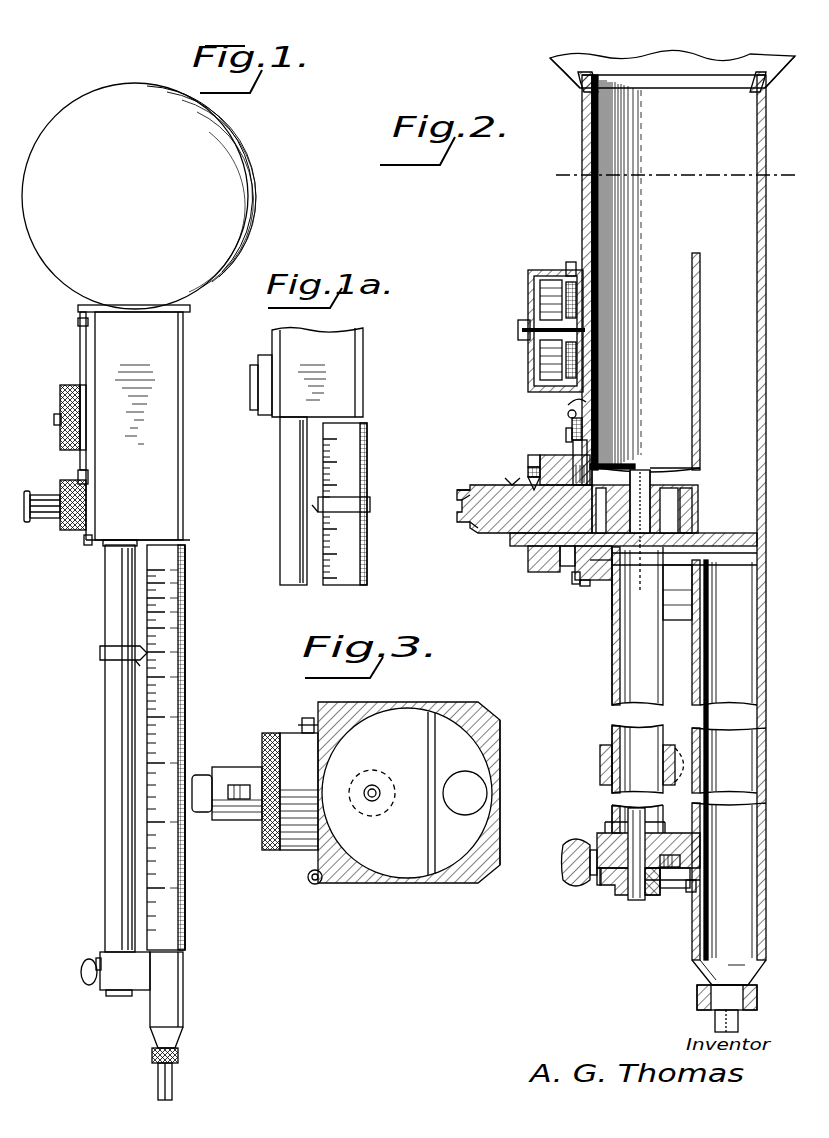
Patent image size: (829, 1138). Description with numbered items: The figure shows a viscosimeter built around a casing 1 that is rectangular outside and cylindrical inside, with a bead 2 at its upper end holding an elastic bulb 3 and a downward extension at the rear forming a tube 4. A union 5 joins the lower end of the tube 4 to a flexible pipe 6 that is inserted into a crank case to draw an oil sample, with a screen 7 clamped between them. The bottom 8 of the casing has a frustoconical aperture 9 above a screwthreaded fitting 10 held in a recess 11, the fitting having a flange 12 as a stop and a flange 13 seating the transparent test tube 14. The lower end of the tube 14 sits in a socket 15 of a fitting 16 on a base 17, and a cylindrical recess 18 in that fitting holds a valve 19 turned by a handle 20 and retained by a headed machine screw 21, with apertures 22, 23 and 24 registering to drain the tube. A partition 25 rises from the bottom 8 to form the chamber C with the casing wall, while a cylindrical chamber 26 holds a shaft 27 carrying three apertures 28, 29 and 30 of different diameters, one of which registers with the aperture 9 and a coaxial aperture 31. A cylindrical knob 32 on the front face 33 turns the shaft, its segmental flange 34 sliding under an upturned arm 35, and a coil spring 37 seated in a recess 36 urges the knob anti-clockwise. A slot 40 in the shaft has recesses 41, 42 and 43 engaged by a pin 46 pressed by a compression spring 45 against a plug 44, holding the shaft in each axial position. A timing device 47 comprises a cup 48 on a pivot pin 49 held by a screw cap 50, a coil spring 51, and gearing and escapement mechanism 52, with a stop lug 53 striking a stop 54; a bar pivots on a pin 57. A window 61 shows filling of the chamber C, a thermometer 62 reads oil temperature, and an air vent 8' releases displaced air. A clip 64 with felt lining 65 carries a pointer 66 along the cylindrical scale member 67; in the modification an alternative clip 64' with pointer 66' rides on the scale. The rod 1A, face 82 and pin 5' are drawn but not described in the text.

In FIG. 1, the casing 1 is at (172, 426).
In FIG. 1A, the casing 1 is at (345, 366).
In FIG. 2, the casing 1 is at (756, 260).
In FIG. 1, the rod 1A is at (115, 752).
In FIG. 1, the bead 2 is at (166, 747).
In FIG. 2, the bead 2 is at (580, 90).
In FIG. 1, the elastic bulb 3 is at (220, 196).
In FIG. 2, the elastic bulb 3 is at (558, 63).
In FIG. 1, the tube 4 is at (186, 965).
In FIG. 3, the tube 4 is at (478, 790).
In FIG. 2, the tube 4 is at (740, 648).
In FIG. 1, the union 5 is at (181, 1052).
In FIG. 2, the union 5 is at (644, 795).
In FIG. 1, the flexible pipe 6 is at (173, 1082).
In FIG. 2, the flexible pipe 6 is at (650, 425).
In FIG. 2, the screen 7 is at (750, 976).
In FIG. 3, the bottom 8 is at (409, 780).
In FIG. 2, the bottom 8 is at (666, 512).
In FIG. 2, the aperture 9 is at (672, 540).
In FIG. 2, the fitting 10 is at (738, 565).
In FIG. 2, the recess 11 is at (738, 553).
In FIG. 2, the flange 12 is at (612, 588).
In FIG. 2, the flange 13 is at (676, 585).
In FIG. 1A, the transparent test tube 14 is at (286, 480).
In FIG. 2, the transparent test tube 14 is at (640, 676).
In FIG. 2, the socket 15 is at (608, 840).
In FIG. 1, the fitting 16 is at (104, 988).
In FIG. 2, the fitting 16 is at (612, 898).
In FIG. 1, the base 17 is at (160, 978).
In FIG. 2, the base 17 is at (698, 912).
In FIG. 2, the cylindrical recess 18 is at (665, 892).
In FIG. 1, the valve 19 is at (97, 962).
In FIG. 2, the valve 19 is at (600, 884).
In FIG. 1, the handle 20 is at (82, 975).
In FIG. 2, the handle 20 is at (568, 862).
In FIG. 2, the headed machine screw 21 is at (682, 866).
In FIG. 2, the aperture 22 is at (640, 854).
In FIG. 2, the aperture 23 is at (638, 900).
In FIG. 2, the aperture 24 is at (650, 880).
In FIG. 3, the partition 25 is at (437, 764).
In FIG. 2, the partition 25 is at (700, 318).
In FIG. 2, the cylindrical chamber 26 is at (702, 472).
In FIG. 1, the shaft 27 is at (52, 520).
In FIG. 3, the shaft 27 is at (292, 771).
In FIG. 2, the shaft 27 is at (500, 532).
In FIG. 2, the aperture 28 is at (700, 492).
In FIG. 3, the aperture 29 is at (373, 802).
In FIG. 2, the aperture 29 is at (643, 470).
In FIG. 2, the aperture 30 is at (633, 470).
In FIG. 2, the aperture 31 is at (652, 470).
In FIG. 1, the cylindrical knob 32 is at (74, 532).
In FIG. 2, the cylindrical knob 32 is at (562, 552).
In FIG. 2, the front face 33 is at (582, 186).
In FIG. 1, the segmental flange 34 is at (88, 513).
In FIG. 2, the segmental flange 34 is at (580, 566).
In FIG. 1, the upturned arm 35 is at (94, 545).
In FIG. 2, the upturned arm 35 is at (584, 586).
In FIG. 2, the cylindrical recess 36 is at (578, 456).
In FIG. 2, the coil spring 37 is at (530, 562).
In FIG. 3, the slot 40 is at (245, 790).
In FIG. 2, the slot 40 is at (508, 484).
In FIG. 2, the recess 41 is at (563, 429).
In FIG. 2, the recess 42 is at (470, 522).
In FIG. 2, the recess 43 is at (462, 490).
In FIG. 2, the screw-threaded plug 44 is at (532, 458).
In FIG. 2, the compression spring 45 is at (530, 470).
In FIG. 2, the pin 46 is at (532, 482).
In FIG. 1, the timing device 47 is at (76, 386).
In FIG. 1, the cylindrical cup 48 is at (60, 405).
In FIG. 3, the cylindrical cup 48 is at (272, 746).
In FIG. 2, the cylindrical cup 48 is at (528, 279).
In FIG. 1, the pivot pin 49 is at (54, 420).
In FIG. 2, the pivot pin 49 is at (548, 325).
In FIG. 3, the screw cap 50 is at (256, 820).
In FIG. 2, the screw cap 50 is at (518, 331).
In FIG. 2, the coil spring 51 is at (545, 376).
In FIG. 2, the gearing and escapement mechanism 52 is at (572, 268).
In FIG. 3, the stop lug 53 is at (308, 718).
In FIG. 3, the stop 54 is at (300, 724).
In FIG. 2, the pivot pin 57 is at (578, 412).
In FIG. 2, the window 61 is at (582, 237).
In FIG. 3, the thermometer 62 is at (315, 885).
In FIG. 1, the clip 64 is at (102, 660).
In FIG. 2, the clip 64 is at (627, 765).
In FIG. 1A, the clip 64' is at (357, 508).
In FIG. 2, the lining 65 is at (602, 760).
In FIG. 1, the pointer 66 is at (110, 677).
In FIG. 1A, the pointer 66' is at (283, 515).
In FIG. 1, the cylindrical scale member 67 is at (186, 602).
In FIG. 1A, the cylindrical scale member 67 is at (368, 447).
In FIG. 3, the block face 82 is at (501, 830).
In FIG. 2, the chamber C is at (662, 352).
In FIG. 2, the pin 5' is at (552, 430).
In FIG. 2, the air vent 8' is at (582, 599).